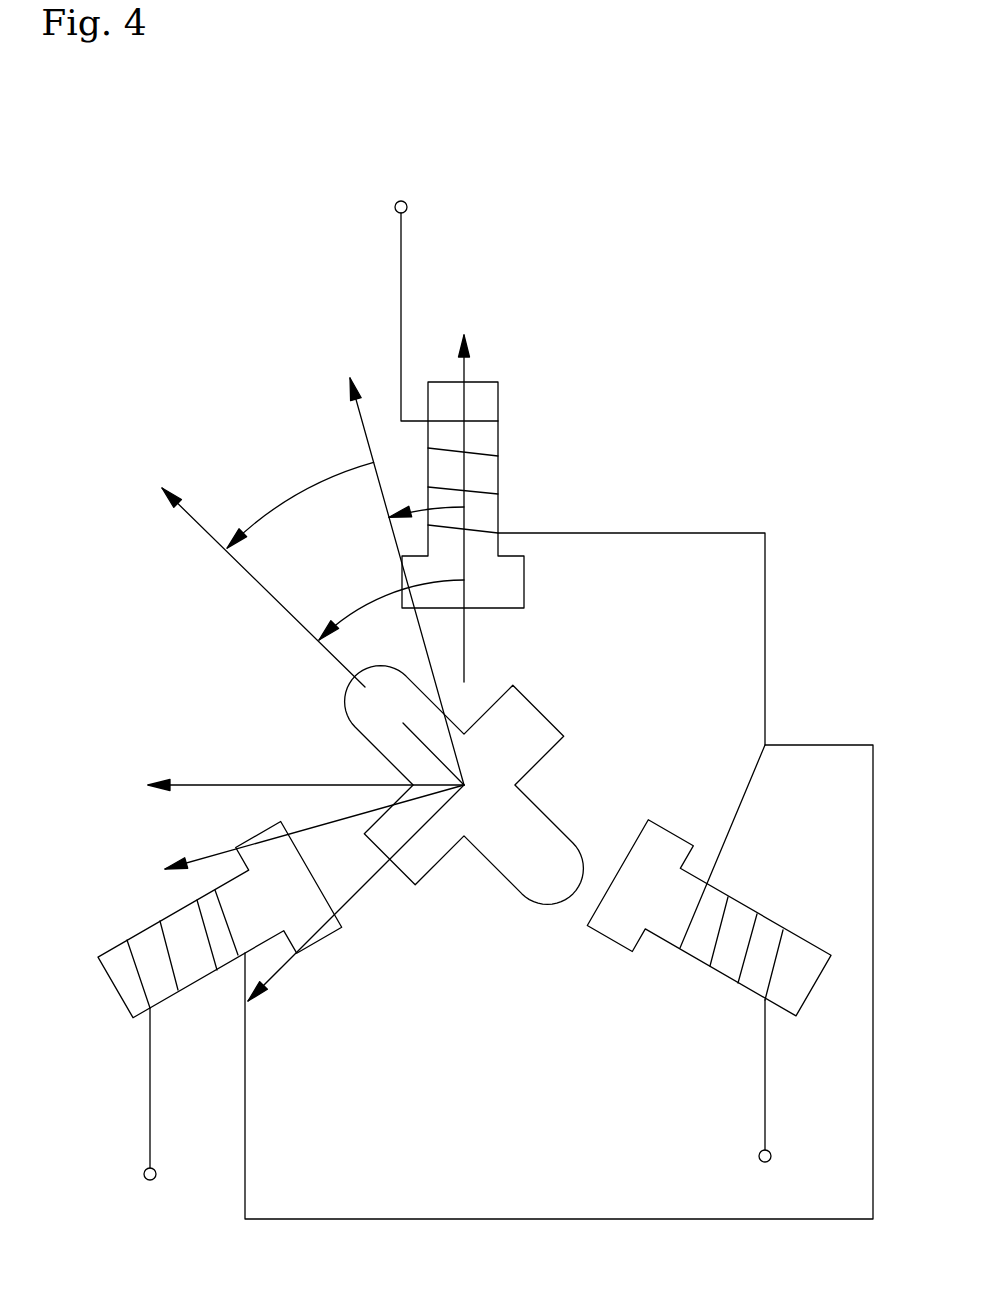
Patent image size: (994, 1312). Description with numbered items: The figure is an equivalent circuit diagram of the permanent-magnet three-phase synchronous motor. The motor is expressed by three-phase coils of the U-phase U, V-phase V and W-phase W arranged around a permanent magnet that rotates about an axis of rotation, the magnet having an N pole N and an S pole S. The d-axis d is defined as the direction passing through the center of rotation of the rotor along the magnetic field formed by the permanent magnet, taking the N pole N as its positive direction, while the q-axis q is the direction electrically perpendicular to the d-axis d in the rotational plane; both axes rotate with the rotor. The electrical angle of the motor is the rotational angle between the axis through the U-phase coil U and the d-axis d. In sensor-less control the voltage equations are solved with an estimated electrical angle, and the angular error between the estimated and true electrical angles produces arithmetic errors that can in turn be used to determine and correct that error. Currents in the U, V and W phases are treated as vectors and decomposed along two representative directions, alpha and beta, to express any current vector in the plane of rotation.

The U-phase coil U is at (476, 400).
The V-phase coil V is at (709, 966).
The W-phase coil W is at (220, 1010).
The N pole of the permanent magnet N is at (464, 785).
The S pole of the permanent magnet S is at (547, 878).
The d-axis d is at (299, 618).
The q-axis q is at (356, 911).